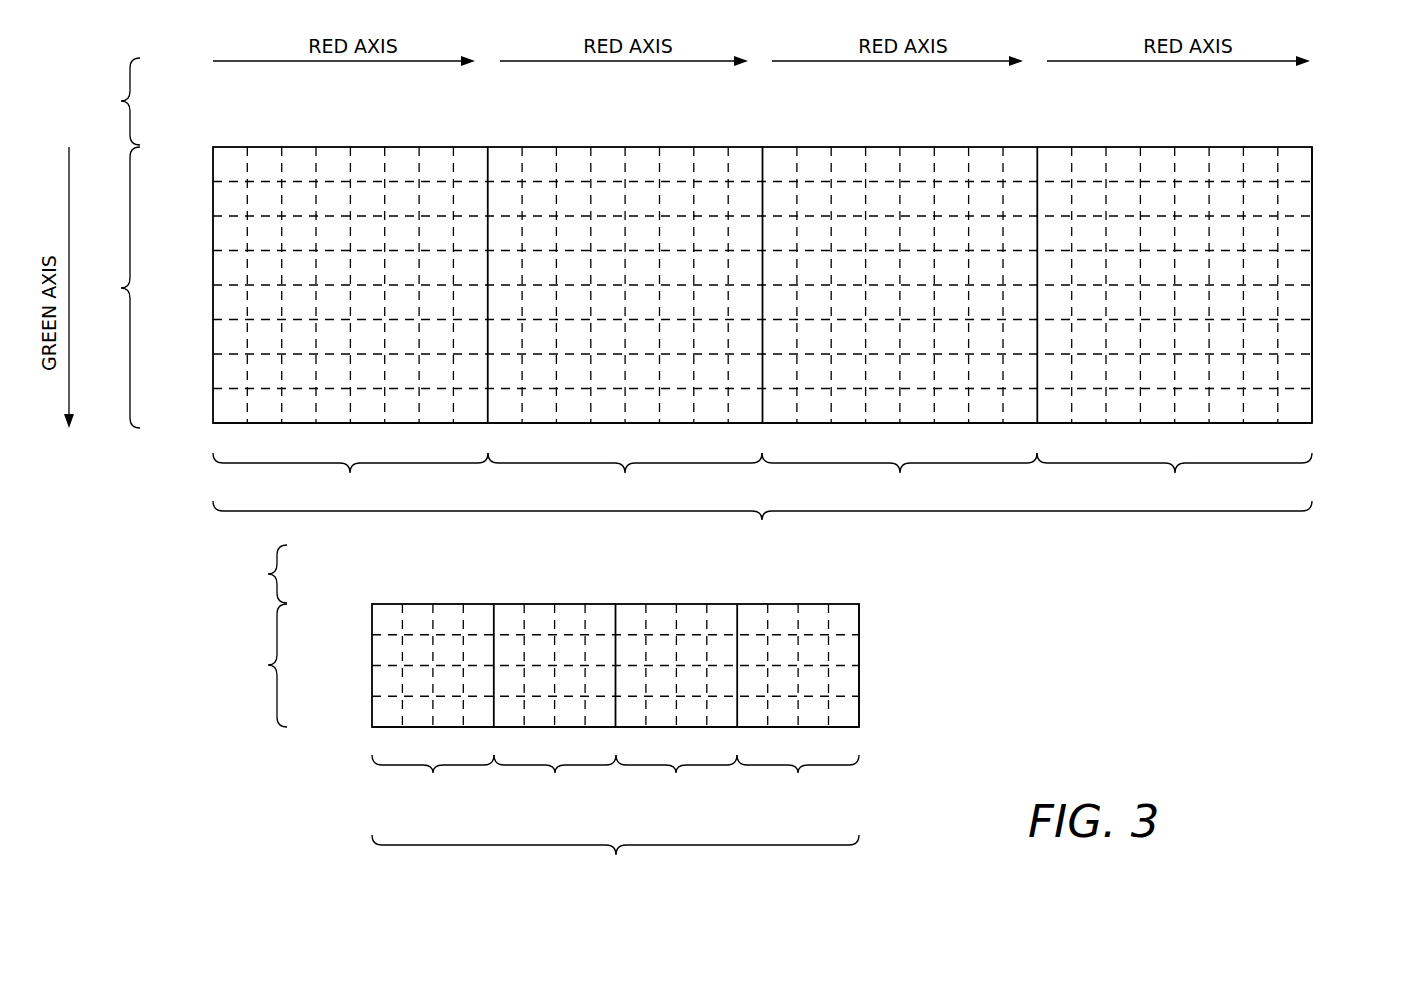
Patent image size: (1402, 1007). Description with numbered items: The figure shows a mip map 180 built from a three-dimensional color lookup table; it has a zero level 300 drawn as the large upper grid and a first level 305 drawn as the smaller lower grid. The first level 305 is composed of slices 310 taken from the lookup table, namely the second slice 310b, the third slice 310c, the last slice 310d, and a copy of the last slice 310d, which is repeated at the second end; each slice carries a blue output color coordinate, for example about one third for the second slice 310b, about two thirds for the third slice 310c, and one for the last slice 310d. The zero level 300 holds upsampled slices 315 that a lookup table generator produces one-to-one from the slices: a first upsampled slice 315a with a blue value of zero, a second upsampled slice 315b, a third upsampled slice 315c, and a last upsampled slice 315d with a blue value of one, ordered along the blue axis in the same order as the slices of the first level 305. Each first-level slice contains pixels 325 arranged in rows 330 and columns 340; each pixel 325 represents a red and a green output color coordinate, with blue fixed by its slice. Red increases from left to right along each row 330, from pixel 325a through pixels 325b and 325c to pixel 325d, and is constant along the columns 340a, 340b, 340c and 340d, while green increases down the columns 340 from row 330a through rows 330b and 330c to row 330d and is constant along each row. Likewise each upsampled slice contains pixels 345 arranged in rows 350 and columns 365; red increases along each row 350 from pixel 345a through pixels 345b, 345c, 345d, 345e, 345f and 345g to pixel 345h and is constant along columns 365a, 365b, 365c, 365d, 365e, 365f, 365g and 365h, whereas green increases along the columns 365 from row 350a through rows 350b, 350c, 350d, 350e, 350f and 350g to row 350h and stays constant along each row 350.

The mip map 180 is at (1175, 566).
The zero level 300 is at (1312, 170).
The first level 305 is at (862, 608).
The slices 310 is at (615, 858).
The second slice 310b is at (434, 691).
The third slice 310c is at (555, 716).
The last slice 310d is at (760, 691).
The upsampled slices 315 is at (762, 524).
The first upsampled slice 315a is at (353, 285).
The second upsampled slice 315b is at (625, 324).
The third upsampled slice 315c is at (899, 324).
The last upsampled slice 315d is at (1174, 285).
The pixels 325 is at (815, 648).
The pixel 325a is at (745, 604).
The pixel 325b is at (776, 604).
The pixel 325c is at (806, 604).
The pixel 325d is at (838, 604).
The rows 330 is at (257, 665).
The row 330a is at (372, 617).
The row 330b is at (372, 647).
The row 330c is at (372, 676).
The row 330d is at (372, 707).
The columns 340 is at (257, 574).
The column 340a is at (386, 604).
The column 340b is at (418, 604).
The column 340c is at (447, 604).
The column 340d is at (480, 604).
The pixels 345 is at (1262, 338).
The pixel 345a is at (1043, 147).
The pixel 345b is at (1088, 147).
The pixel 345c is at (1118, 147).
The pixel 345d is at (1146, 147).
The pixel 345e is at (1200, 147).
The pixel 345f is at (1228, 147).
The pixel 345g is at (1262, 147).
The pixel 345h is at (1305, 147).
The rows 350 is at (107, 287).
The row 350a is at (213, 164).
The row 350b is at (213, 199).
The row 350c is at (213, 233).
The row 350d is at (213, 268).
The row 350e is at (213, 302).
The row 350f is at (213, 337).
The row 350g is at (213, 371).
The row 350h is at (213, 406).
The columns 365 is at (107, 101).
The column 365a is at (220, 147).
The column 365b is at (263, 147).
The column 365c is at (295, 147).
The column 365d is at (324, 147).
The column 365e is at (377, 147).
The column 365f is at (405, 147).
The column 365g is at (438, 147).
The column 365h is at (485, 147).